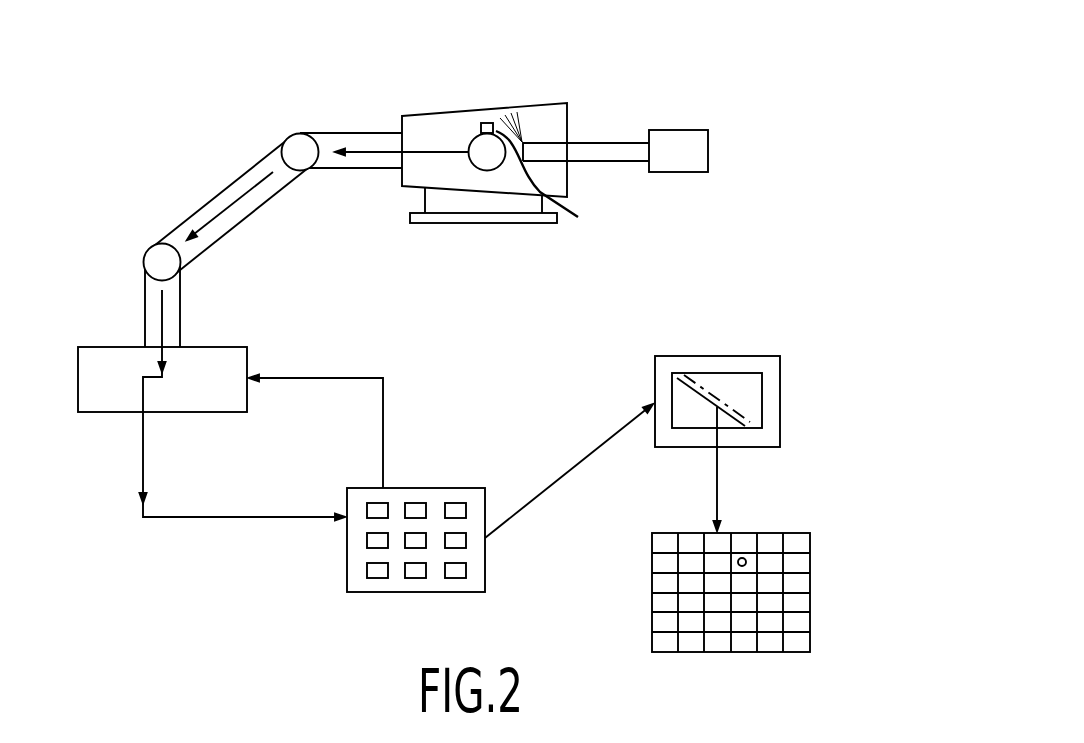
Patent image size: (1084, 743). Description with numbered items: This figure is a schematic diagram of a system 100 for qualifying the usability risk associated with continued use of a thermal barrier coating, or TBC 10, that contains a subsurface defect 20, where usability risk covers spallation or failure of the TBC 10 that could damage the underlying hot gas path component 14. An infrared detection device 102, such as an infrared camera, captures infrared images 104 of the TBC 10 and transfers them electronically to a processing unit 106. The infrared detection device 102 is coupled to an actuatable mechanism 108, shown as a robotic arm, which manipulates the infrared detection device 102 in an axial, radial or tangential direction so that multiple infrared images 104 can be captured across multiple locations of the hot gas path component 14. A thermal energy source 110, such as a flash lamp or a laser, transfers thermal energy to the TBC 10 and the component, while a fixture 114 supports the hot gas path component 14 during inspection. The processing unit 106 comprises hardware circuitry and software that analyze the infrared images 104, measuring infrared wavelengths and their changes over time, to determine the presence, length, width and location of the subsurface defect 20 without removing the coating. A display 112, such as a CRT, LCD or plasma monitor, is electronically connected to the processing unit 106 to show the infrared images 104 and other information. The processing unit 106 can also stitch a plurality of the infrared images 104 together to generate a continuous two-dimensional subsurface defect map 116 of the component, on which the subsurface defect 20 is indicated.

The system 100 is at (720, 60).
The thermal barrier coating 10 is at (466, 118).
The hot gas path component 14 is at (565, 96).
The subsurface defect 20 is at (495, 111).
The infrared detection device 102 is at (559, 184).
The infrared images 104 is at (245, 195).
The processing unit 106 is at (438, 480).
The actuatable mechanism 108 is at (346, 124).
The thermal energy source 110 is at (680, 152).
The display 112 is at (750, 383).
The fixture 114 is at (444, 219).
The subsurface defect map 116 is at (820, 559).